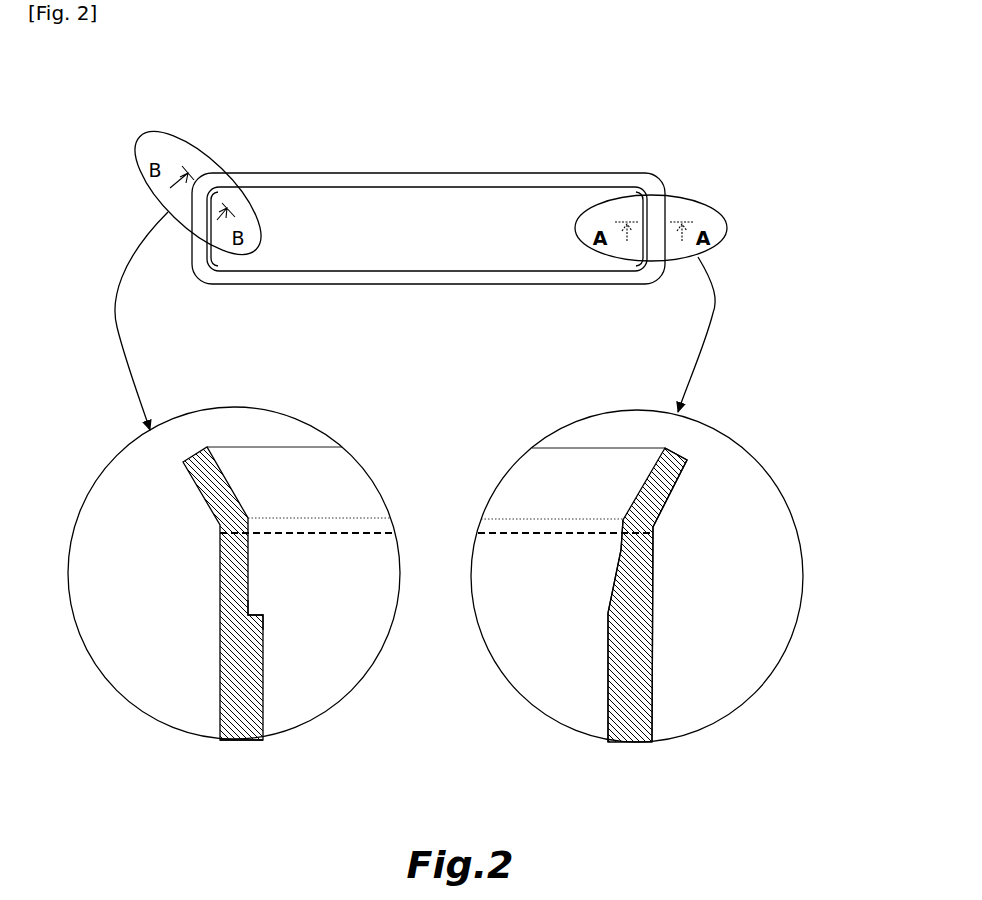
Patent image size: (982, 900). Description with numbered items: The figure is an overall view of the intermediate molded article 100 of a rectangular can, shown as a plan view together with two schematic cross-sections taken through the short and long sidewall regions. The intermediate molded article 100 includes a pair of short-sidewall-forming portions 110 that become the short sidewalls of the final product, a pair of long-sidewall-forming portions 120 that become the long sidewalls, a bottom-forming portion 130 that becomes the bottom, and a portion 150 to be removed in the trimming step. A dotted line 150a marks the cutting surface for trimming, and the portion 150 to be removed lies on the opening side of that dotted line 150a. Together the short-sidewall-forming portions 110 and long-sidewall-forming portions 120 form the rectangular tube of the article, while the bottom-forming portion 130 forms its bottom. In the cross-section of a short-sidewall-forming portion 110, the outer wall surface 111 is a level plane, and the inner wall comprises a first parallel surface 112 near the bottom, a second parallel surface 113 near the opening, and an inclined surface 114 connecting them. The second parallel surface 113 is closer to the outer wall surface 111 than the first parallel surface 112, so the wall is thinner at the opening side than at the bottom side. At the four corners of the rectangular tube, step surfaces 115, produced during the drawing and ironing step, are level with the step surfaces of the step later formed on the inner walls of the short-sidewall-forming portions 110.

The intermediate molded article 100 is at (681, 145).
The short-sidewall-forming portion 110 is at (679, 623).
The outer wall surface 111 is at (653, 693).
The first parallel surface 112 is at (608, 682).
The second parallel surface 113 is at (623, 548).
The inclined surface 114 is at (645, 213).
The step surface 115 is at (218, 270).
The long-sidewall-forming portion 120 is at (333, 682).
The bottom-forming portion 130 is at (500, 227).
The portion to be removed 150 is at (413, 177).
The dotted line 150a is at (335, 532).